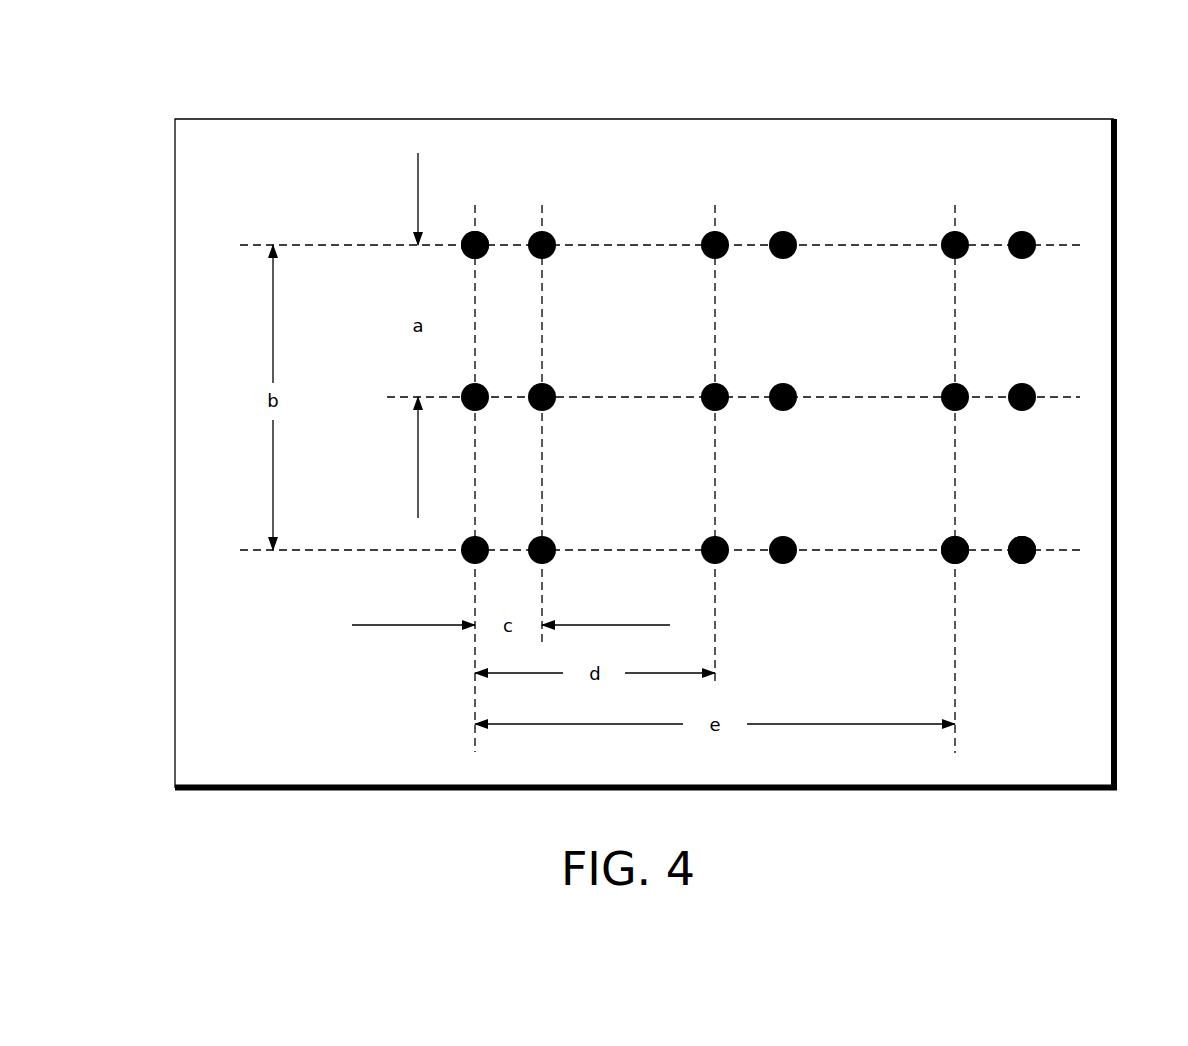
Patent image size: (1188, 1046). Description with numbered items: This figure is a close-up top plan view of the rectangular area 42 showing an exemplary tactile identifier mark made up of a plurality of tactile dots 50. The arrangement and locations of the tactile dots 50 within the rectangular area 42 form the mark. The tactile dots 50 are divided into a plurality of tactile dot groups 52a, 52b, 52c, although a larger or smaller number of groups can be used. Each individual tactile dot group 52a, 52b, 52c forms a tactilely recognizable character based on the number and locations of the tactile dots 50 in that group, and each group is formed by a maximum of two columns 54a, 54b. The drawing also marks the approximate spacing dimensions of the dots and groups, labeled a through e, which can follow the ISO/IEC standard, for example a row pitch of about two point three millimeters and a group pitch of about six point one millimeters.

The rectangular area 42 is at (175, 438).
The tactile dots 50 is at (480, 232).
The tactile dot group 52a is at (995, 202).
The tactile dot group 52b is at (755, 202).
The tactile dot group 52c is at (515, 202).
The column 54a is at (1026, 562).
The column 54b is at (960, 562).